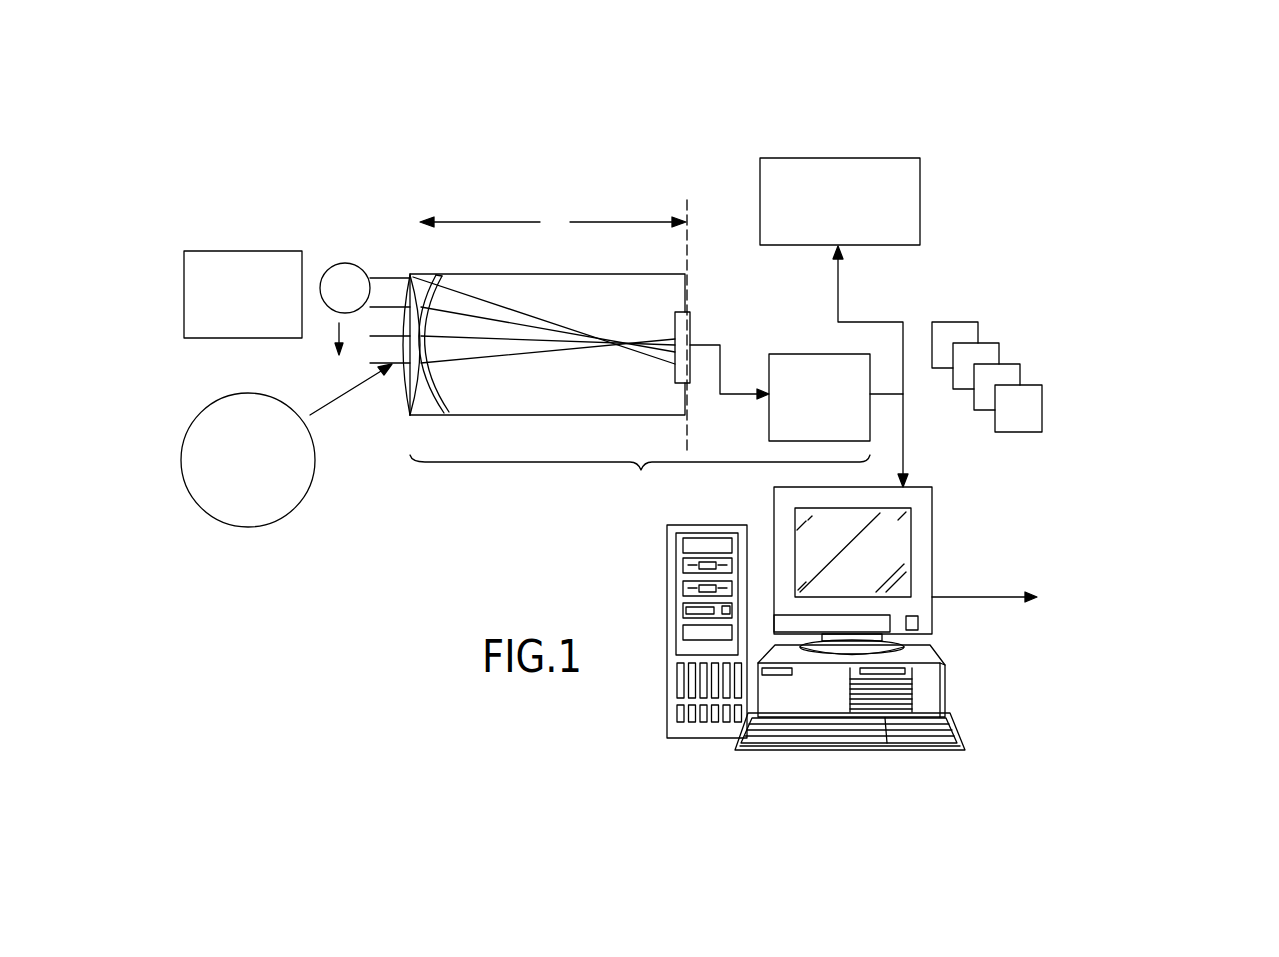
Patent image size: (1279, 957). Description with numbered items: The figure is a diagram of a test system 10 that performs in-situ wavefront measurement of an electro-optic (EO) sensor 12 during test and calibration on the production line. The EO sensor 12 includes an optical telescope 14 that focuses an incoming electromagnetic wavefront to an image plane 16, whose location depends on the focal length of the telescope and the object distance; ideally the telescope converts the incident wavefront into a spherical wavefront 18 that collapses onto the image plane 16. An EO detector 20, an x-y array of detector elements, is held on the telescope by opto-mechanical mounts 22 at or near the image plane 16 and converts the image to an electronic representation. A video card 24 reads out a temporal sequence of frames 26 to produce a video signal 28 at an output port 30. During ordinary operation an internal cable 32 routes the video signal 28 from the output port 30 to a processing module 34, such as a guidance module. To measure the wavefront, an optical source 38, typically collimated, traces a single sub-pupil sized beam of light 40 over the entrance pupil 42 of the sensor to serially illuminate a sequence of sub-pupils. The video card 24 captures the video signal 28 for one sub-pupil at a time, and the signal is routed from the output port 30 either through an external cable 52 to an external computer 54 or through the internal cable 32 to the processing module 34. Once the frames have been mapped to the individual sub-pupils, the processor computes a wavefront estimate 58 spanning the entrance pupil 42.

The test system 10 is at (482, 135).
The electro-optic (EO) sensor 12 is at (640, 476).
The optical telescope 14 is at (407, 400).
The image plane 16 is at (636, 211).
The spherical wavefront 18 is at (416, 283).
The EO detector 20 is at (692, 325).
The opto-mechanical mounts 22 is at (582, 413).
The video card 24 is at (805, 354).
The frames 26 is at (978, 336).
The video signal 28 is at (1066, 354).
The output port 30 is at (882, 396).
The internal cable 32 is at (840, 321).
The processing module 34 is at (921, 206).
The optical source 38 is at (241, 251).
The beam of light 40 is at (333, 265).
The entrance pupil 42 is at (292, 511).
The external cable 52 is at (904, 458).
The external computer 54 is at (934, 562).
The wavefront estimate 58 is at (1134, 584).